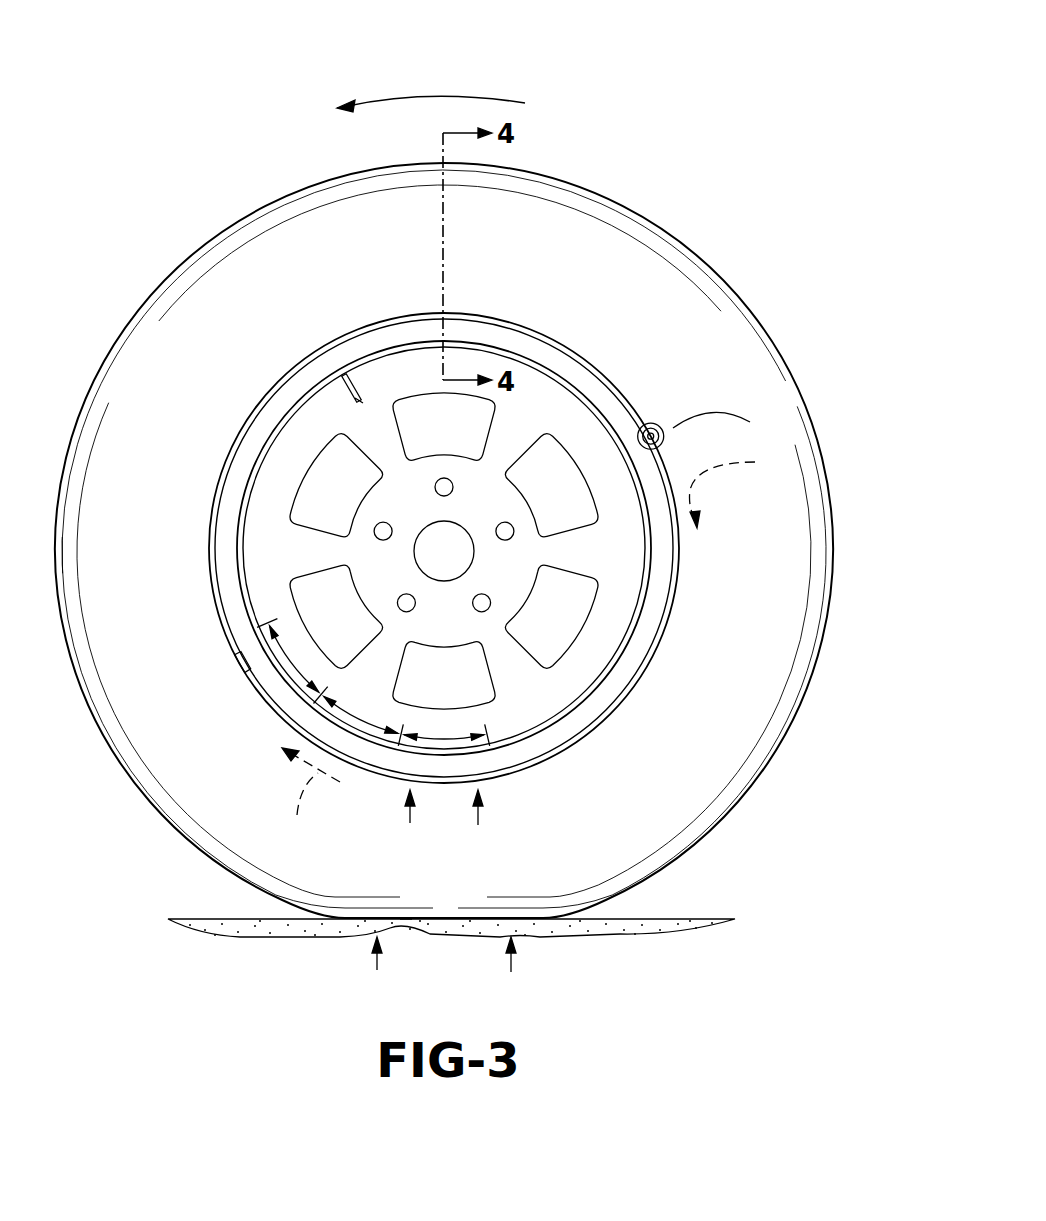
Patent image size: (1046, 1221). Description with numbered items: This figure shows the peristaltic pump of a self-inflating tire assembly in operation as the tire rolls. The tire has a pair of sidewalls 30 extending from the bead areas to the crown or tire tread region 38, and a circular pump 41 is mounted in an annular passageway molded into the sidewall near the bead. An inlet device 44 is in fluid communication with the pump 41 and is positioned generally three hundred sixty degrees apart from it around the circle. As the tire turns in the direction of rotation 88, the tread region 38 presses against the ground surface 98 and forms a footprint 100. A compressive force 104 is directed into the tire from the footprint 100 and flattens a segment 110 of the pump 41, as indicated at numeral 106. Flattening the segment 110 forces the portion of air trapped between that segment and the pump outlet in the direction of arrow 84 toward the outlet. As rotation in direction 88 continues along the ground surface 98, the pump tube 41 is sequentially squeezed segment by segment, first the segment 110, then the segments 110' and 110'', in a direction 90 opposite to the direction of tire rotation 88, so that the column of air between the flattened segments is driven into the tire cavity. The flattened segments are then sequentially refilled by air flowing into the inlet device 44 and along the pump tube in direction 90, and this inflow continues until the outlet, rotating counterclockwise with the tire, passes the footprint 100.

The sidewall 30 is at (557, 242).
The tire tread region 38 is at (672, 229).
The pump 41 is at (508, 323).
The inlet device 44 is at (661, 429).
The arrow 84 is at (311, 795).
The direction of rotation 88 is at (525, 103).
The direction 90 is at (739, 489).
The ground surface 98 is at (708, 919).
The footprint 100 is at (405, 919).
The compressive force 104 is at (377, 960).
The flattening of the pump segment 106 is at (410, 823).
The segment 110 is at (443, 729).
The segment 110' is at (356, 705).
The segment 110'' is at (304, 655).